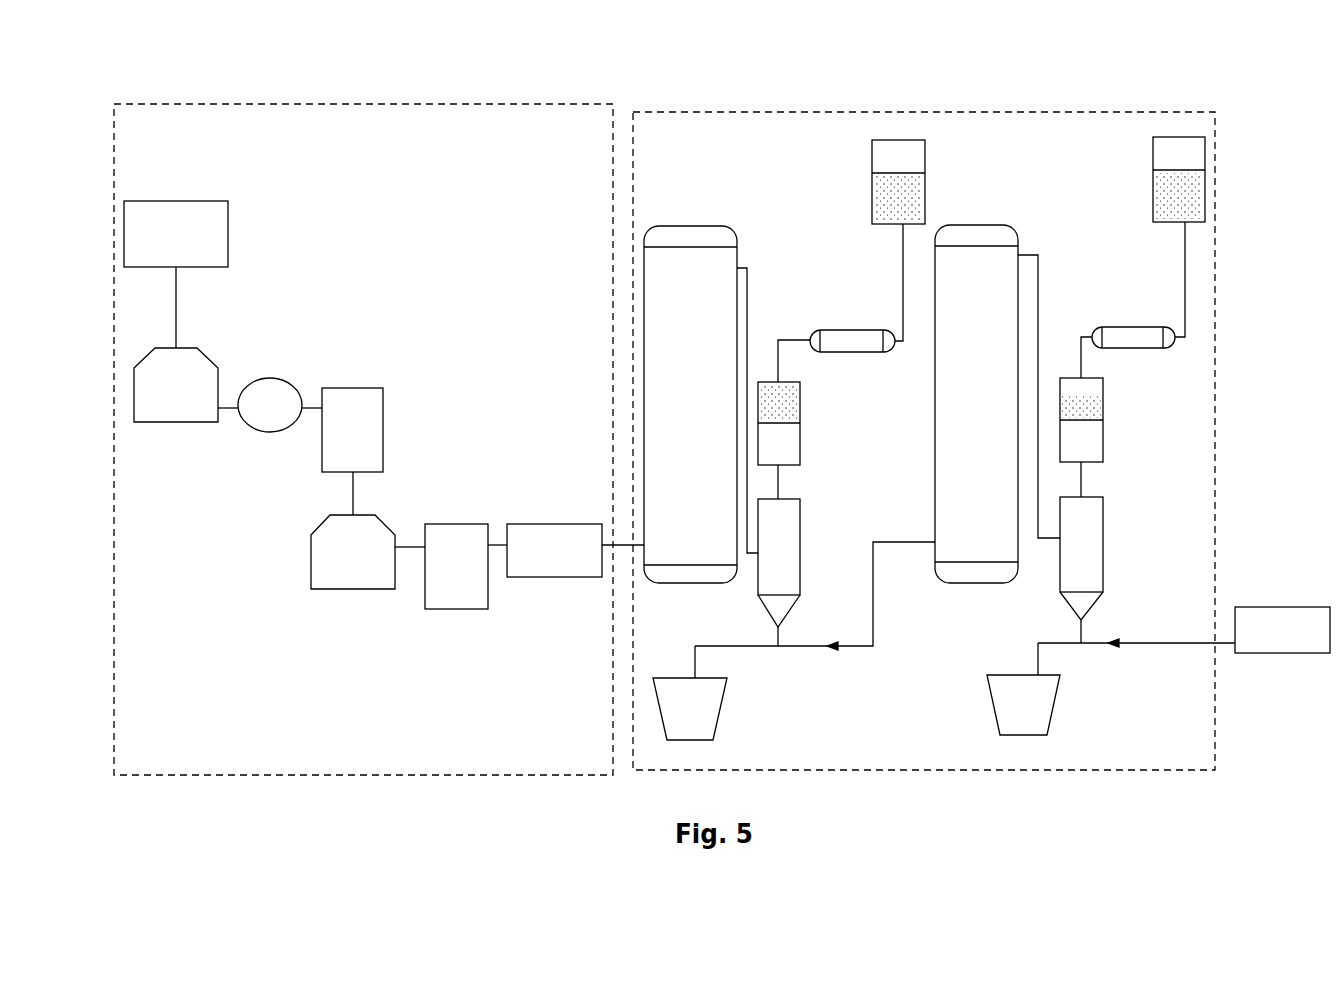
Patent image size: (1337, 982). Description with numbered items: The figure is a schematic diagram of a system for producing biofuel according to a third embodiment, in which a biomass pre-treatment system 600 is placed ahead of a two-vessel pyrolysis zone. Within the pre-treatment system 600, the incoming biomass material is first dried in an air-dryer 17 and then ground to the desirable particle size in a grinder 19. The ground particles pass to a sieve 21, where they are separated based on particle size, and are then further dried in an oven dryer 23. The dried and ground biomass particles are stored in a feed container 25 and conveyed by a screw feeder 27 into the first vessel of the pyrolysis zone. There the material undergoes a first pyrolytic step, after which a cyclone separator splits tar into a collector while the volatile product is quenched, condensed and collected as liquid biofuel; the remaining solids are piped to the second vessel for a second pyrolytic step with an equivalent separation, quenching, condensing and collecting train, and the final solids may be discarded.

The biomass pre-treatment system 600 is at (467, 103).
The air-dryer 17 is at (207, 368).
The grinder 19 is at (270, 388).
The sieve 21 is at (350, 387).
The oven dryer 23 is at (352, 590).
The feed container 25 is at (458, 610).
The screw feeder 27 is at (560, 578).